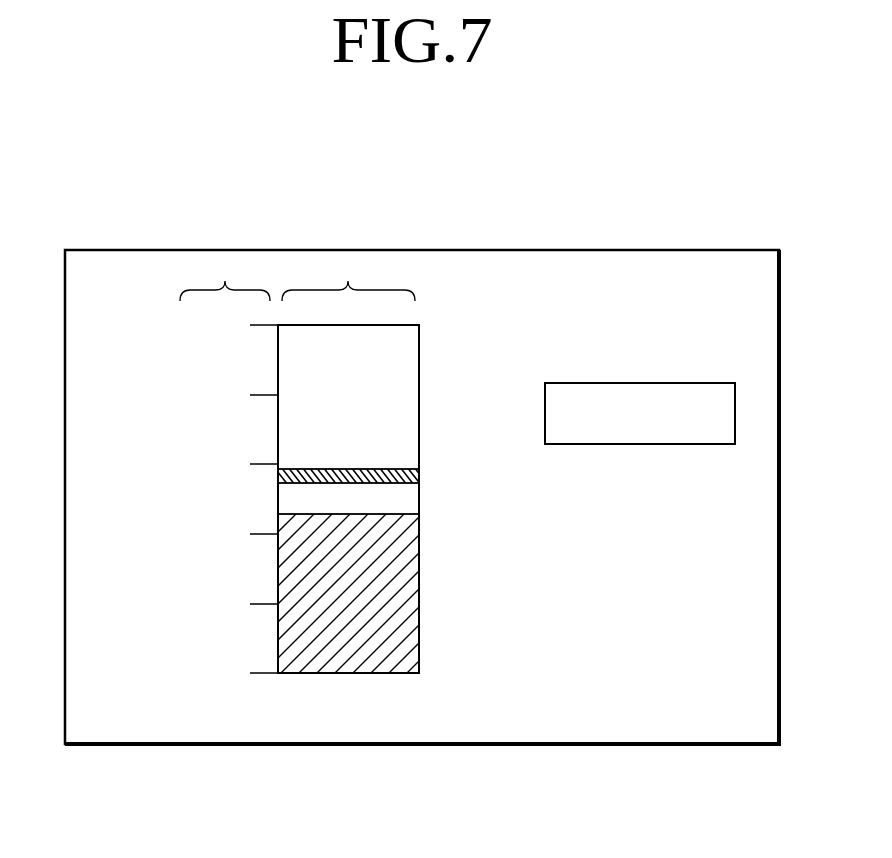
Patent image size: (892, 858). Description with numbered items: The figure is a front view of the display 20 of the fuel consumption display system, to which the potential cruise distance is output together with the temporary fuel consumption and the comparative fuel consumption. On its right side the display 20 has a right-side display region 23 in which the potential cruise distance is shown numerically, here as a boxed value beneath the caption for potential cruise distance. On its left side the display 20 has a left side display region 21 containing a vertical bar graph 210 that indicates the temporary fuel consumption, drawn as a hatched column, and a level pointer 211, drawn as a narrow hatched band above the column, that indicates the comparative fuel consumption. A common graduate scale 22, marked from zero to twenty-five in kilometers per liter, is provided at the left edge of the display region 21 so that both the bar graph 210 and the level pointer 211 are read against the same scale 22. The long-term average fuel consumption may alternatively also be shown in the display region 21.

The display 20 is at (667, 250).
The left side display region 21 is at (348, 281).
The common graduate scale 22 is at (226, 281).
The right-side display region 23 is at (585, 444).
The bar graph 210 is at (395, 578).
The level pointer 211 is at (395, 466).